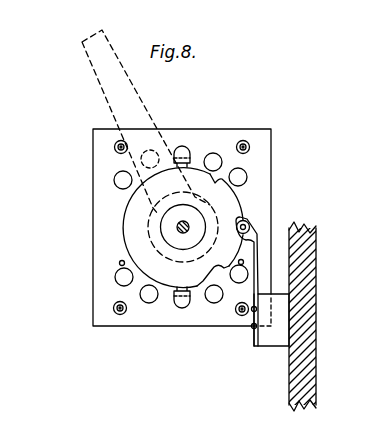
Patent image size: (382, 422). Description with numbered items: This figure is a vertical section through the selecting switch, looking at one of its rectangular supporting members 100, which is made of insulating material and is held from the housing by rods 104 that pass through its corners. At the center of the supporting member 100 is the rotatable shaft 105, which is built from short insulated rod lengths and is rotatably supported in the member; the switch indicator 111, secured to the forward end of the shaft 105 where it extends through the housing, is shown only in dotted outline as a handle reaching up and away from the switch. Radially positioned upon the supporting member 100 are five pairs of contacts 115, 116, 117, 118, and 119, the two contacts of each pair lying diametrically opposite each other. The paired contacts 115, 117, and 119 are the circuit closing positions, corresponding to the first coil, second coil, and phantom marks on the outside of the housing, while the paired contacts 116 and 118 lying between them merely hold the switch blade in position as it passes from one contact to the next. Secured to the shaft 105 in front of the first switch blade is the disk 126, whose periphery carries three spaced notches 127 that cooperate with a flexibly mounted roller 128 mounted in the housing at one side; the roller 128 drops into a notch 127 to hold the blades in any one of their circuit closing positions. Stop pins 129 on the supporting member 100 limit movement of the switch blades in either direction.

The supporting member 100 is at (93, 164).
The rods 104 is at (117, 145).
The rotatable shaft 105 is at (176, 229).
The switch indicator 111 is at (90, 62).
The paired contacts 115 is at (121, 183).
The paired contacts 116 is at (152, 150).
The paired contacts 117 is at (180, 146).
The paired contacts 118 is at (214, 153).
The paired contacts 119 is at (247, 175).
The disk 126 is at (238, 206).
The notches 127 is at (217, 181).
The flexibly mounted roller 128 is at (251, 221).
The stop pins 129 is at (119, 263).